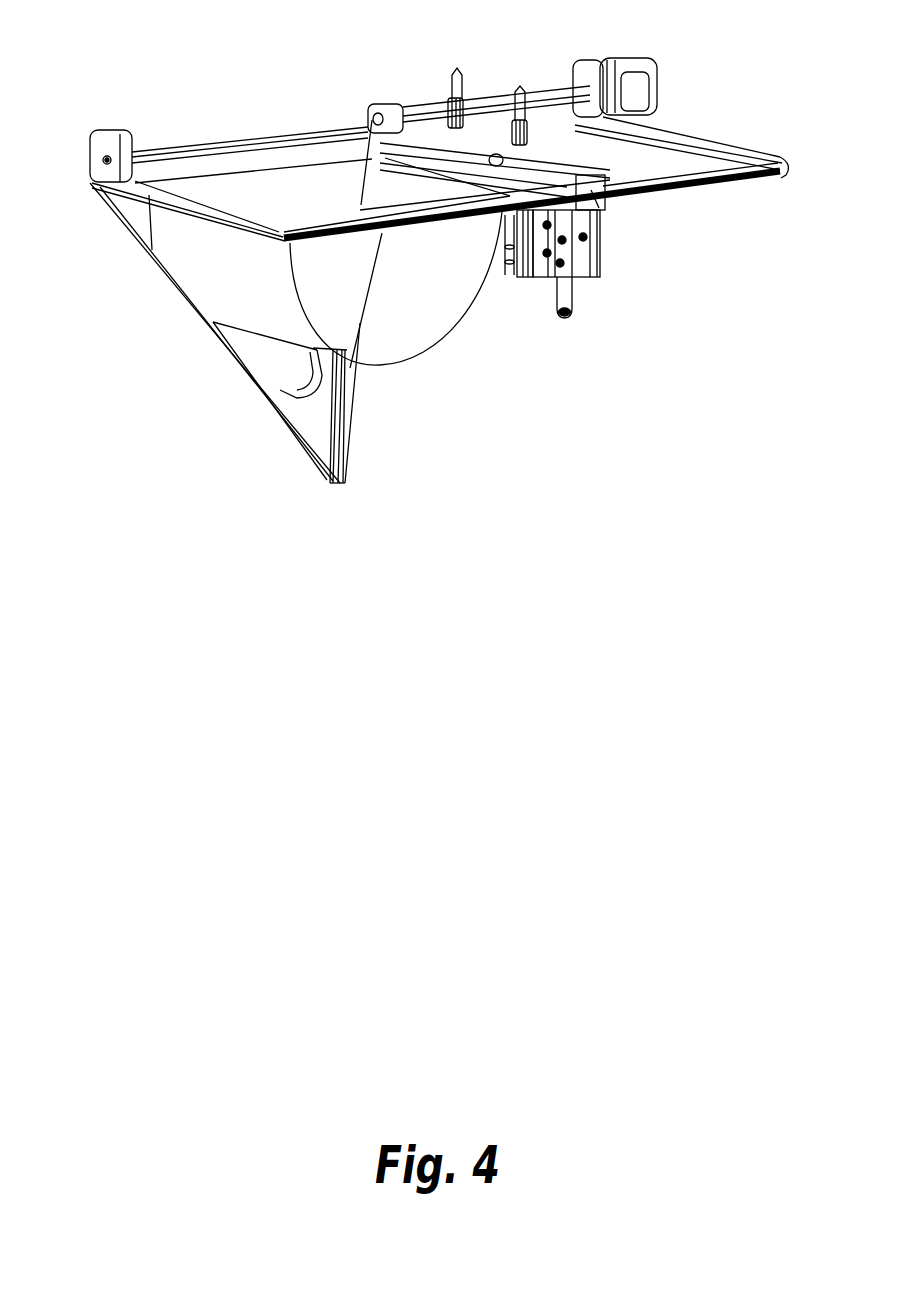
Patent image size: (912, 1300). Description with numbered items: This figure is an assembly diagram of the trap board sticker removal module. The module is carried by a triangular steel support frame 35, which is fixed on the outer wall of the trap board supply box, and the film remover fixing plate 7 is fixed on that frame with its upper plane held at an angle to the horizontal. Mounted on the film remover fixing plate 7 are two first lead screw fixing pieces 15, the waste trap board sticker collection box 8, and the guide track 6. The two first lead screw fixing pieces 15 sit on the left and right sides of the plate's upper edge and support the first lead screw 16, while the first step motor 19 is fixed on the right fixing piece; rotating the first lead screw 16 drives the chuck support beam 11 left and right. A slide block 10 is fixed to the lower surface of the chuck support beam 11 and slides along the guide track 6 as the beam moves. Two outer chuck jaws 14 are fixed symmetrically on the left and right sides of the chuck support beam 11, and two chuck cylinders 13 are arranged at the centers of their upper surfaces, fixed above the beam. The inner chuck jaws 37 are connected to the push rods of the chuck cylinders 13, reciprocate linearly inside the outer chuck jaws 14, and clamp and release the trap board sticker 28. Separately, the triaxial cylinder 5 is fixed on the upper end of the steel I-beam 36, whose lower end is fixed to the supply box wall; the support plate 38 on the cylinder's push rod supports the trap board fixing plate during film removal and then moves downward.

The first lead screw fixing pieces 15 is at (80, 39).
The first lead screw 16 is at (213, 39).
The chuck support beam 11 is at (358, 39).
The chuck cylinders 13 is at (414, 39).
The first step motor 19 is at (823, 36).
The trap board sticker 28 is at (823, 85).
The film remover fixing plate 7 is at (770, 135).
The waste trap board sticker collection box 8 is at (83, 383).
The triangular steel support frame 35 is at (83, 559).
The guide track 6 is at (317, 559).
The inner chuck jaws 37 is at (397, 559).
The outer chuck jaws 14 is at (493, 559).
The steel I-beam 36 is at (613, 559).
The triaxial cylinder 5 is at (717, 559).
The slide block 10 is at (820, 559).
The support plate 38 is at (820, 472).